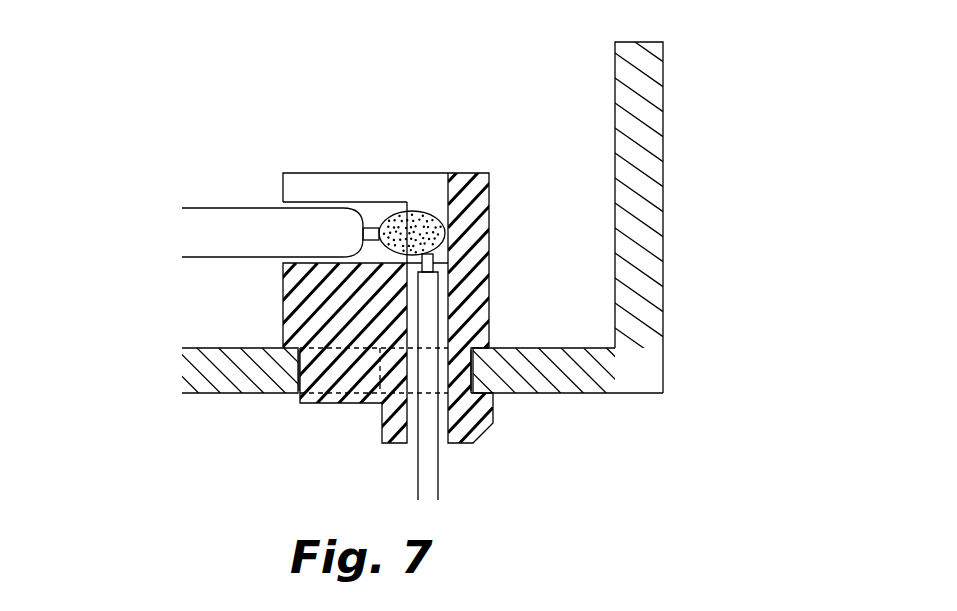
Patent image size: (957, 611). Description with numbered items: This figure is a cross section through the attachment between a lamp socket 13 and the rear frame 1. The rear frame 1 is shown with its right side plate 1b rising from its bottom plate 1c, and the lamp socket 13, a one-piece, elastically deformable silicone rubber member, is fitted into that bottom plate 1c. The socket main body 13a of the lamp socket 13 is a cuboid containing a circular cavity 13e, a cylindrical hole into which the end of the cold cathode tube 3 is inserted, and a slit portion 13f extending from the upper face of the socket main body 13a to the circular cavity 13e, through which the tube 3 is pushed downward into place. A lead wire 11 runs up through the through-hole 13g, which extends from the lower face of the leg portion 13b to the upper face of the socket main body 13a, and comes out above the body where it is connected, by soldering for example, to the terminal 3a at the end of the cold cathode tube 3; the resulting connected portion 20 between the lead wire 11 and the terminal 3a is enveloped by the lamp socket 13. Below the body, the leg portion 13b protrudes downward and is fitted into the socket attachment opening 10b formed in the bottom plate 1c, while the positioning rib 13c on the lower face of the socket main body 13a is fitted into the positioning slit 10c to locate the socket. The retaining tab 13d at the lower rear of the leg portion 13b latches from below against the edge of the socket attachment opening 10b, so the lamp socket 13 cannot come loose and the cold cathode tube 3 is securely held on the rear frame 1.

The rear frame 1 is at (448, 198).
The right side plate 1b is at (663, 147).
The bottom plate 1c is at (567, 347).
The cold cathode tube 3 is at (200, 207).
The terminal 3a is at (369, 210).
The connected portion 20 is at (417, 212).
The lead wire 11 is at (417, 465).
The lamp socket 13 is at (353, 284).
The socket main body 13a is at (283, 305).
The leg portion 13b is at (477, 368).
The positioning rib 13c is at (327, 405).
The retaining tab 13d is at (477, 413).
The circular cavity 13e is at (328, 262).
The slit portion 13f is at (282, 178).
The through-hole 13g is at (473, 271).
The socket attachment opening 10b is at (462, 352).
The positioning slit 10c is at (298, 365).